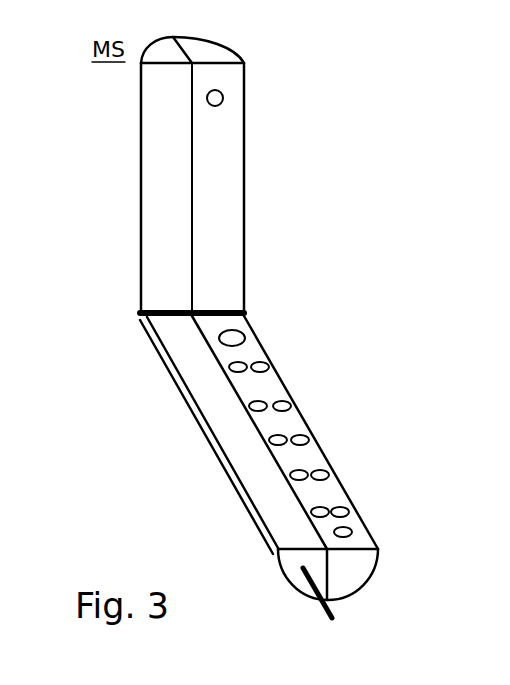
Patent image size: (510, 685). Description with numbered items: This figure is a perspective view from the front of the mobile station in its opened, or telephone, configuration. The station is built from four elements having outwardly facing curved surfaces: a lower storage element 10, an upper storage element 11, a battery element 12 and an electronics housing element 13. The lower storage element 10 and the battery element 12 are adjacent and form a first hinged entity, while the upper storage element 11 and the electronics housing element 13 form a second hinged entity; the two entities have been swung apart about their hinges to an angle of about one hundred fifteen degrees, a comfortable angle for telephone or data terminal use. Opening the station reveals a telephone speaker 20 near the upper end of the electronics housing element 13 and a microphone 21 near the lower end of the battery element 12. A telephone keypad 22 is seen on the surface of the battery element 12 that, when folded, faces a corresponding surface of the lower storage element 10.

The lower storage element 10 is at (205, 425).
The upper storage element 11 is at (141, 138).
The battery element 12 is at (308, 423).
The electronics housing element 13 is at (244, 146).
The telephone speaker 20 is at (221, 92).
The microphone 21 is at (348, 528).
The telephone keypad 22 is at (243, 329).